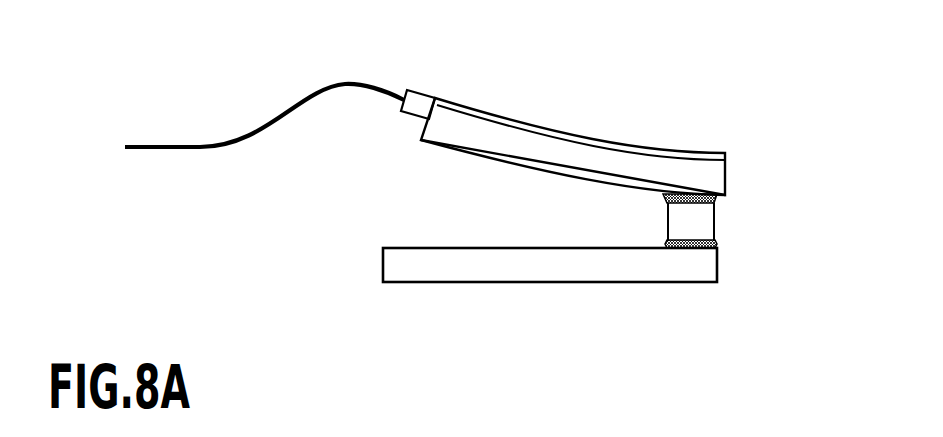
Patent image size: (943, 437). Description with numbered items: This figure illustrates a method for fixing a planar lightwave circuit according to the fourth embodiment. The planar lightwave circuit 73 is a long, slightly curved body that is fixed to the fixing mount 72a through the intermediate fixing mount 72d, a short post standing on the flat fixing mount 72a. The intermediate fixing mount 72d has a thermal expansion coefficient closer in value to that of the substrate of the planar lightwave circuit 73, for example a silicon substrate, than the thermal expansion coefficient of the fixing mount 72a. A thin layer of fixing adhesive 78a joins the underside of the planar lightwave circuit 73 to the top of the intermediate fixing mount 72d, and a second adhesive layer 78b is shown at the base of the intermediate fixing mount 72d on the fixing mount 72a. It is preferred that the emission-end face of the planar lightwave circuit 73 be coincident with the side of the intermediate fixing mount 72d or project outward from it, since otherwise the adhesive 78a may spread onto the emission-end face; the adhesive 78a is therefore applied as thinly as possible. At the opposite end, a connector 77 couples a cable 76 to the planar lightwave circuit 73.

The cable 76 is at (192, 147).
The connector 77 is at (430, 90).
The planar lightwave circuit 73 is at (552, 188).
The fixing adhesive 78a is at (718, 202).
The lower contact pad 78b is at (718, 245).
The intermediate fixing mount 72d is at (682, 220).
The fixing mount 72a is at (400, 265).